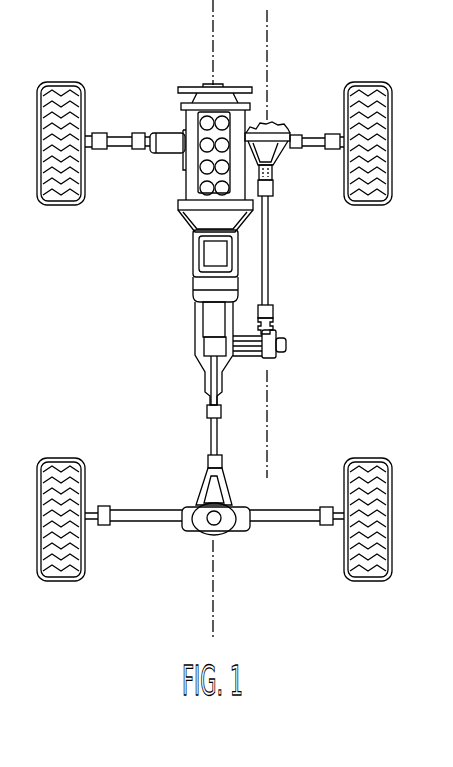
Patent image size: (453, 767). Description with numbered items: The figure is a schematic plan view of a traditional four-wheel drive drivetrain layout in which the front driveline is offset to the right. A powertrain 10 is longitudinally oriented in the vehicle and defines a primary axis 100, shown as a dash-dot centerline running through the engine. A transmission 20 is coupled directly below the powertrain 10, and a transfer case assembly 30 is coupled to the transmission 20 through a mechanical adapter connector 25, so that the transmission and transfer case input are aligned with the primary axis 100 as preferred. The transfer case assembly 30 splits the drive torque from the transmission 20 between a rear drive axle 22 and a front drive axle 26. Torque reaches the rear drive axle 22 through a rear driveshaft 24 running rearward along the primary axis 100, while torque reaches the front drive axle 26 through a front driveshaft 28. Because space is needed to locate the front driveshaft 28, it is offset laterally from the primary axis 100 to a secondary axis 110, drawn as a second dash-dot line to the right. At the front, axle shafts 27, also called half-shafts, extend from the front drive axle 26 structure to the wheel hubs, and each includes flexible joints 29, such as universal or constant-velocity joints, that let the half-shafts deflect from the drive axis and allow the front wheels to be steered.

The primary axis 100 is at (213, 53).
The secondary axis 110 is at (267, 62).
The powertrain 10 is at (193, 178).
The transmission 20 is at (182, 261).
The rear drive axle 22 is at (265, 534).
The rear driveshaft 24 is at (210, 433).
The mechanical adapter connector 25 is at (203, 291).
The front drive axle 26 is at (163, 132).
The axle shafts 27 is at (124, 136).
The front driveshaft 28 is at (270, 238).
The flexible joints 29 is at (138, 150).
The transfer case assembly 30 is at (290, 347).